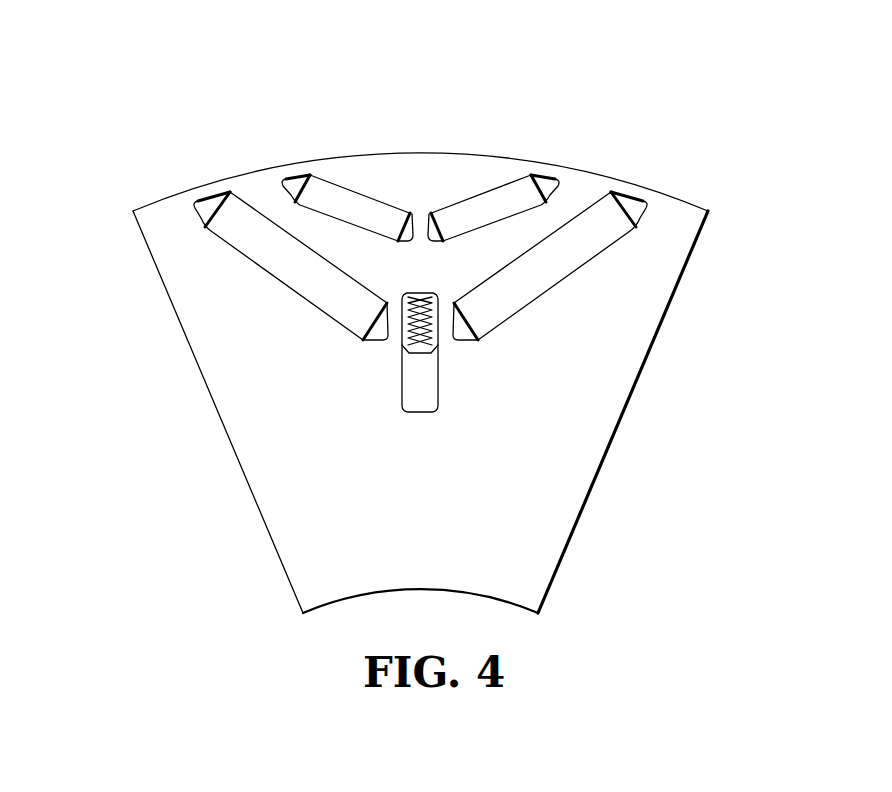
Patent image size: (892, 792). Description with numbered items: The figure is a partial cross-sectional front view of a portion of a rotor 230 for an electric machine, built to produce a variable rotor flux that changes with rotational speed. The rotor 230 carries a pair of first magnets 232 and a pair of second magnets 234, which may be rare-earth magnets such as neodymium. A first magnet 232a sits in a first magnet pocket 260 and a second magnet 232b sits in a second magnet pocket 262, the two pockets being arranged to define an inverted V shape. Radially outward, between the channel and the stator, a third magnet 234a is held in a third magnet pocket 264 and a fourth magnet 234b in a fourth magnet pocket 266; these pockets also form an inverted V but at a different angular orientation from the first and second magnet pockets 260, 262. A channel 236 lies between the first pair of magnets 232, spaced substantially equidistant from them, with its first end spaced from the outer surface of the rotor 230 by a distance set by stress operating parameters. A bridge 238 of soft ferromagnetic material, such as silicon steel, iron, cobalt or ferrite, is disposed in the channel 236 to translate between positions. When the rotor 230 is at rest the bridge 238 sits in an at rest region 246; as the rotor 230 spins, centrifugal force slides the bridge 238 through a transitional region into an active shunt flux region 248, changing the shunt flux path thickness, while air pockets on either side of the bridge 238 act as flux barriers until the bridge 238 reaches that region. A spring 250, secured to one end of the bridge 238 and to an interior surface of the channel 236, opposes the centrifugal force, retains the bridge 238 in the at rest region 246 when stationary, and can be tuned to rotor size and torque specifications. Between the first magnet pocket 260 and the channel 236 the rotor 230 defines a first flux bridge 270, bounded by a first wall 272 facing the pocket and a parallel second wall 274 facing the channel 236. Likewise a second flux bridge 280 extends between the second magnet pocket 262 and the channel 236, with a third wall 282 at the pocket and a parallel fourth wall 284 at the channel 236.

The rotor 230 is at (670, 195).
The pair of first magnets 232 is at (183, 168).
The pair of second magnets 234 is at (178, 64).
The first magnet 232a is at (283, 282).
The second magnet 232b is at (588, 262).
The third magnet 234a is at (360, 193).
The fourth magnet 234b is at (480, 193).
The channel 236 is at (400, 377).
The bridge 238 is at (417, 395).
The at rest region 246 is at (442, 377).
The active shunt flux region 248 is at (438, 353).
The spring 250 is at (403, 349).
The first magnet pocket 260 is at (210, 208).
The second magnet pocket 262 is at (632, 207).
The third magnet pocket 264 is at (297, 183).
The fourth magnet pocket 266 is at (547, 183).
The first flux bridge 270 is at (397, 323).
The first wall 272 is at (387, 318).
The second wall 274 is at (403, 353).
The second flux bridge 280 is at (440, 315).
The third wall 282 is at (440, 326).
The fourth wall 284 is at (440, 333).